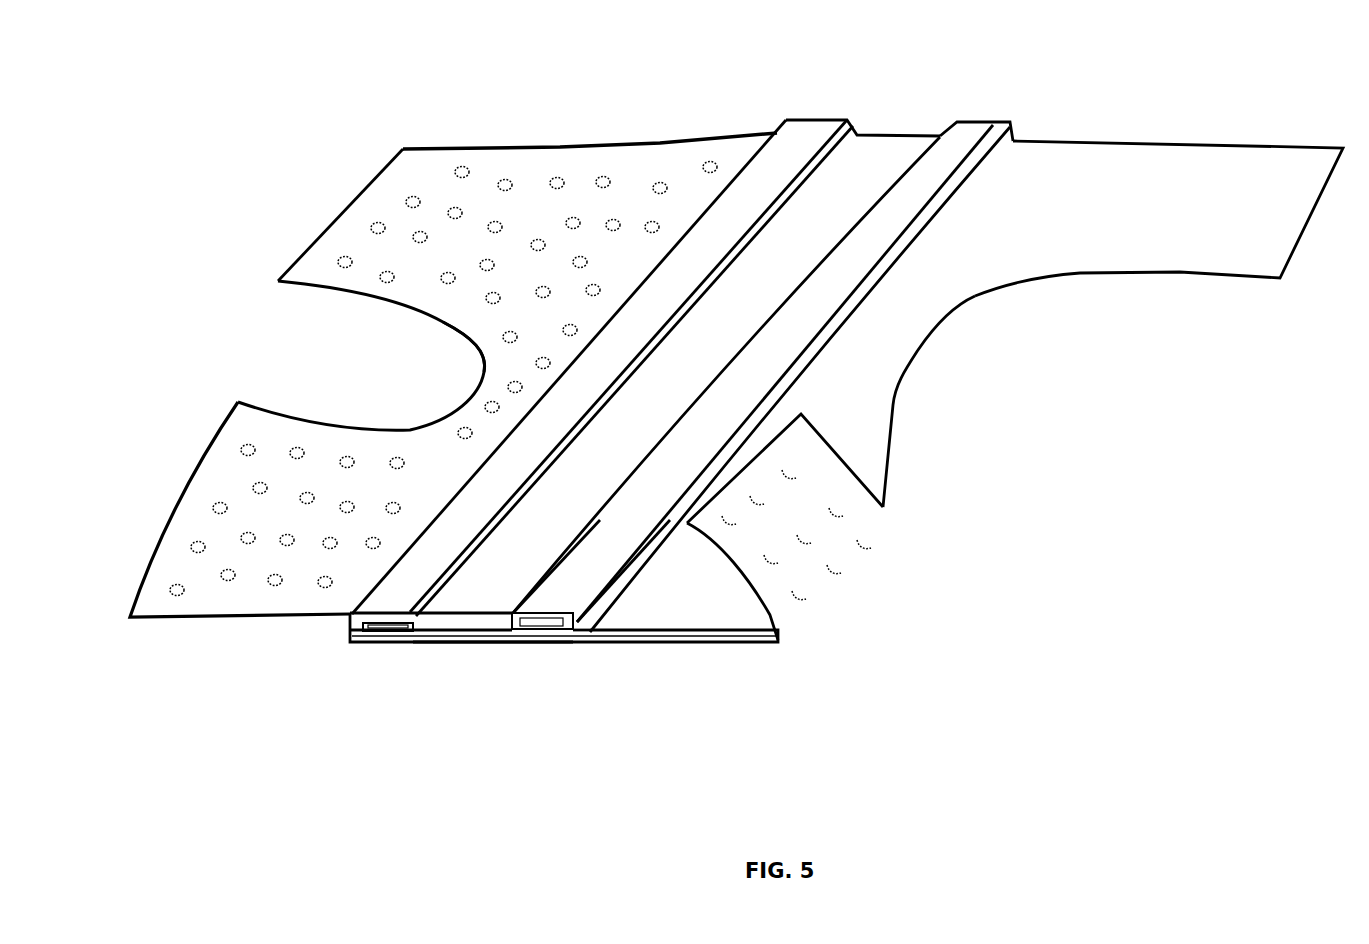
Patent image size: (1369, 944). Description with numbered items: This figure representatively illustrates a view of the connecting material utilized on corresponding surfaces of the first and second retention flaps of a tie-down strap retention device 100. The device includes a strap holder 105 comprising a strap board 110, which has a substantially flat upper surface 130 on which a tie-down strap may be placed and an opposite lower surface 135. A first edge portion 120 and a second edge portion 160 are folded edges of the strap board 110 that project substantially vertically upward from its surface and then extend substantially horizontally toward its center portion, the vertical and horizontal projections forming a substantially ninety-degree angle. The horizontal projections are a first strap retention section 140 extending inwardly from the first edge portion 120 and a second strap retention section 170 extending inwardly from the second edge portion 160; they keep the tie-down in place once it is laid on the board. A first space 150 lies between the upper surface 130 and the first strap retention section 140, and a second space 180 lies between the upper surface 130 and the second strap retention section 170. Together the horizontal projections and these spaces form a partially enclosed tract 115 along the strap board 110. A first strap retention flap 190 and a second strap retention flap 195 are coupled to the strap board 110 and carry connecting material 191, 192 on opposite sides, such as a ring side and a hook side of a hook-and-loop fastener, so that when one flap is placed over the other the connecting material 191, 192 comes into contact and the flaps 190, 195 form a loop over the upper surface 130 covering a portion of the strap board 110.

The tie-down strap retention device 100 is at (328, 108).
The strap holder 105 is at (818, 392).
The strap board 110 is at (937, 158).
The partially enclosed tract 115 is at (832, 233).
The first edge portion 120 is at (623, 572).
The upper surface 130 is at (473, 626).
The lower surface 135 is at (473, 646).
The first strap retention section 140 is at (540, 593).
The first space 150 is at (530, 633).
The second edge portion 160 is at (347, 625).
The second strap retention section 170 is at (385, 593).
The second space 180 is at (388, 634).
The first strap retention flap 190 is at (522, 173).
The connecting material 191 is at (385, 278).
The connecting material 192 is at (860, 543).
The second strap retention flap 195 is at (1205, 168).